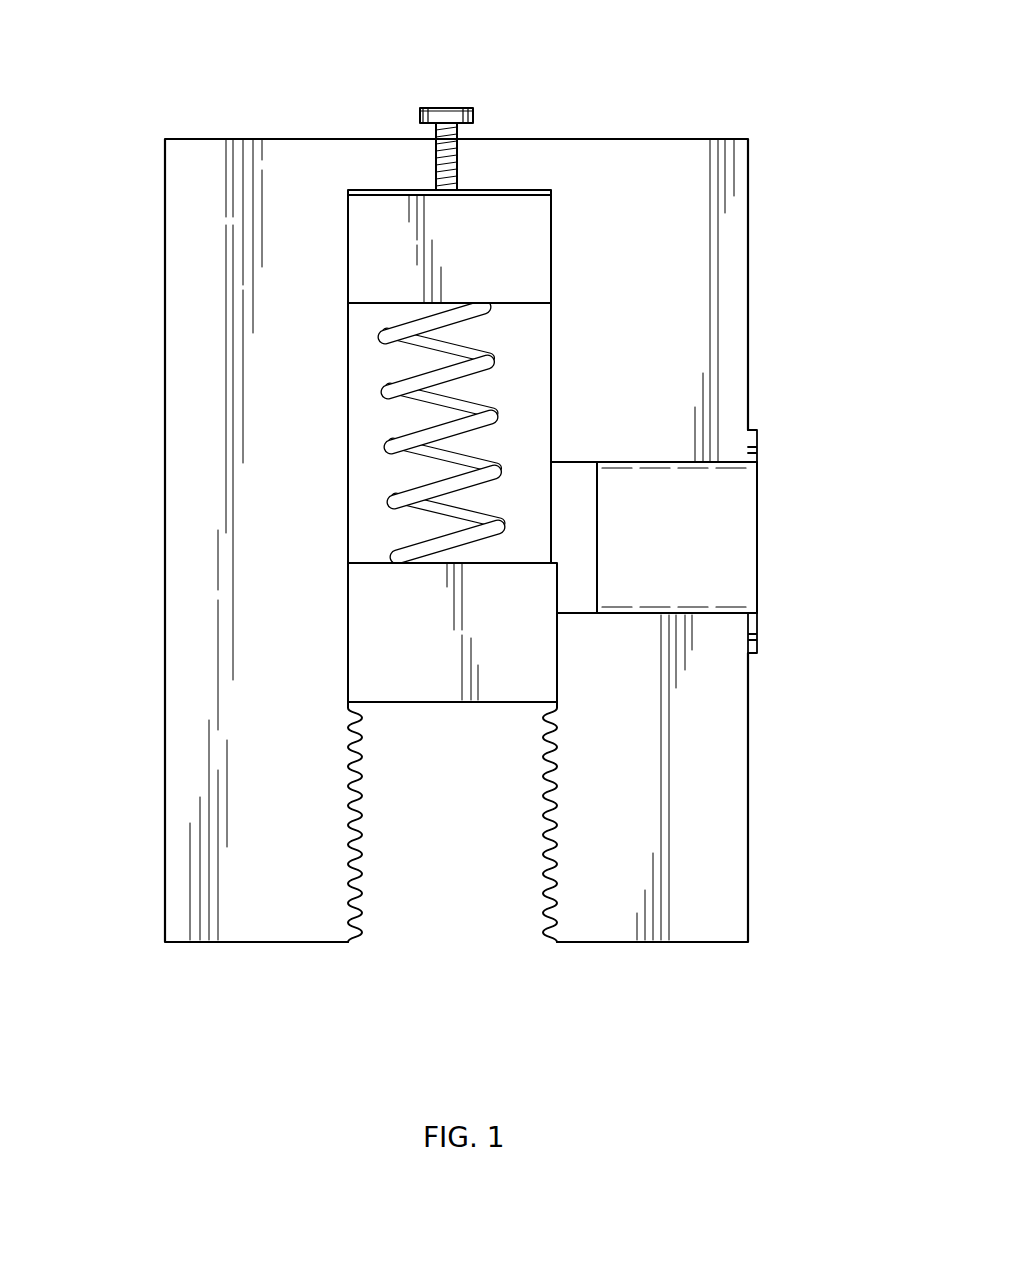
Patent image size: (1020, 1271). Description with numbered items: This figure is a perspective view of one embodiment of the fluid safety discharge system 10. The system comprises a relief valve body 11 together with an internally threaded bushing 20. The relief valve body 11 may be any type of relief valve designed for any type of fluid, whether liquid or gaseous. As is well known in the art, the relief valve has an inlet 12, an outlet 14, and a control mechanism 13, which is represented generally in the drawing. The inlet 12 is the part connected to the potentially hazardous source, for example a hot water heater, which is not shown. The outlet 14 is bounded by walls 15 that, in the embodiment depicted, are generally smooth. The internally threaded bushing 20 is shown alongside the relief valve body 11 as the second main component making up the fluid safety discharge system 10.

The fluid safety discharge system 10 is at (737, 75).
The relief valve body 11 is at (145, 445).
The inlet 12 is at (427, 950).
The control mechanism 13 is at (377, 390).
The outlet 14 is at (568, 445).
The walls 15 is at (586, 462).
The internally threaded bushing 20 is at (766, 543).